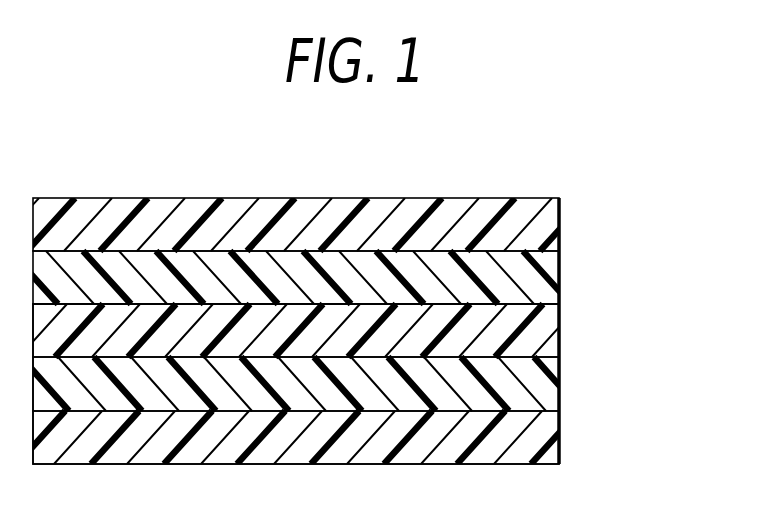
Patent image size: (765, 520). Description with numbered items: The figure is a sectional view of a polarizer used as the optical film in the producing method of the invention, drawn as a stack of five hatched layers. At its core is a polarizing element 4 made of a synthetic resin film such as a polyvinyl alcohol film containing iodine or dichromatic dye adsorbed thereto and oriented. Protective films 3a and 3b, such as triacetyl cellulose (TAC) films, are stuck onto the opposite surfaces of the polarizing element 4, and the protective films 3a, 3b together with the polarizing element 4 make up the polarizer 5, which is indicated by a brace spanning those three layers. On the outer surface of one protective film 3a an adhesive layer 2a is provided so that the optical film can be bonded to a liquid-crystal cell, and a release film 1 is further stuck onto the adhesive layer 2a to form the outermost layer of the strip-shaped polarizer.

The release film 1 is at (561, 221).
The adhesive layer 2a is at (561, 268).
The protective film 3a is at (561, 326).
The polarizing element 4 is at (561, 378).
The protective film 3b is at (561, 425).
The polarizer 5 is at (653, 310).